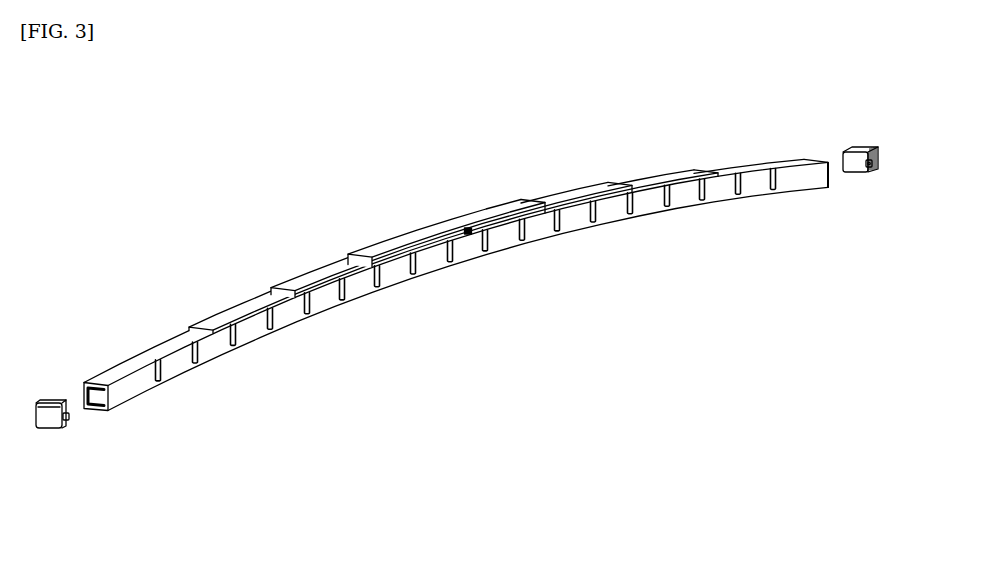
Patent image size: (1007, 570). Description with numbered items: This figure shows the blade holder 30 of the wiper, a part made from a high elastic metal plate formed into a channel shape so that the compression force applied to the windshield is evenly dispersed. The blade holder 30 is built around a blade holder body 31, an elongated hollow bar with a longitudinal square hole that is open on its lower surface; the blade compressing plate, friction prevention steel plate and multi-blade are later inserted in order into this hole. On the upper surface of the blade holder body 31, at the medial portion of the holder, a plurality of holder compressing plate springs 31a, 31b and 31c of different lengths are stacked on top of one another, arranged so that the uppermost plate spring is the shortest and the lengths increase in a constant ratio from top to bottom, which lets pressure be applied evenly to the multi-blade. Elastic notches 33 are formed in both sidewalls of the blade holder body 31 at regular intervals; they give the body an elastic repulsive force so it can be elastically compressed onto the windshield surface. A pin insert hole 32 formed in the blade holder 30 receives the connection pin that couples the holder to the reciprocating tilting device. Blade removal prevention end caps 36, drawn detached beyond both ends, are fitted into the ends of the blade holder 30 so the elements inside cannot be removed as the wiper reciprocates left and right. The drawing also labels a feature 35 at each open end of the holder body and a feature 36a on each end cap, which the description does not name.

The blade holder 30 is at (456, 248).
The blade holder body 31 is at (165, 350).
The holder compressing plate spring 31a is at (256, 306).
The holder compressing plate spring 31b is at (333, 268).
The holder compressing plate spring 31c is at (420, 229).
The pin insert hole 32 is at (466, 231).
The elastic notches 33 is at (702, 203).
The beam end opening 35 is at (111, 395).
The end cap 36 is at (47, 430).
The end cap tab 36a is at (69, 417).